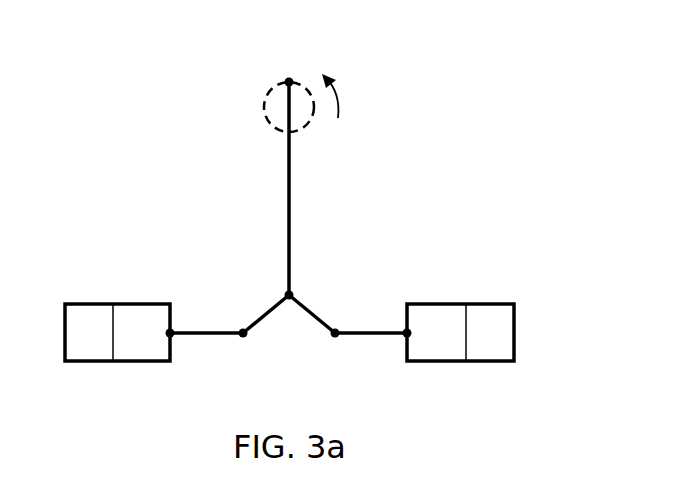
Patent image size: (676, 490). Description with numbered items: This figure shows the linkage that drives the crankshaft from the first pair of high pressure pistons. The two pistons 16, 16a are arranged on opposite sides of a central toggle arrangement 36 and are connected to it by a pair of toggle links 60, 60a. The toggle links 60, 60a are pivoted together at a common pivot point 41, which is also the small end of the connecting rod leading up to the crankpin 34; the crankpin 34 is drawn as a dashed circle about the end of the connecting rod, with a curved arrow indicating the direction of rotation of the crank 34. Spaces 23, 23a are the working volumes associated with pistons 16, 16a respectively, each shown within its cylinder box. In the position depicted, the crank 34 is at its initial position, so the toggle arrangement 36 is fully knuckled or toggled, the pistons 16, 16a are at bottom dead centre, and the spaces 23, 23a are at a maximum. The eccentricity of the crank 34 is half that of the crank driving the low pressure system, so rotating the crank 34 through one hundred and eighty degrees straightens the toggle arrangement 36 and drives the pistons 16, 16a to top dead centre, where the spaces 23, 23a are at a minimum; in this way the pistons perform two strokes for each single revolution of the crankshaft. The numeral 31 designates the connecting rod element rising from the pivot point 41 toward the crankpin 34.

The piston 16 is at (148, 313).
The piston 16a is at (427, 310).
The space 23 is at (82, 352).
The space 23a is at (497, 330).
The lever arm 31 is at (290, 208).
The crankpin 34 is at (292, 82).
The toggle arrangement 36 is at (286, 346).
The pivot point 41 is at (292, 293).
The toggle link 60 is at (265, 312).
The toggle link 60a is at (320, 312).